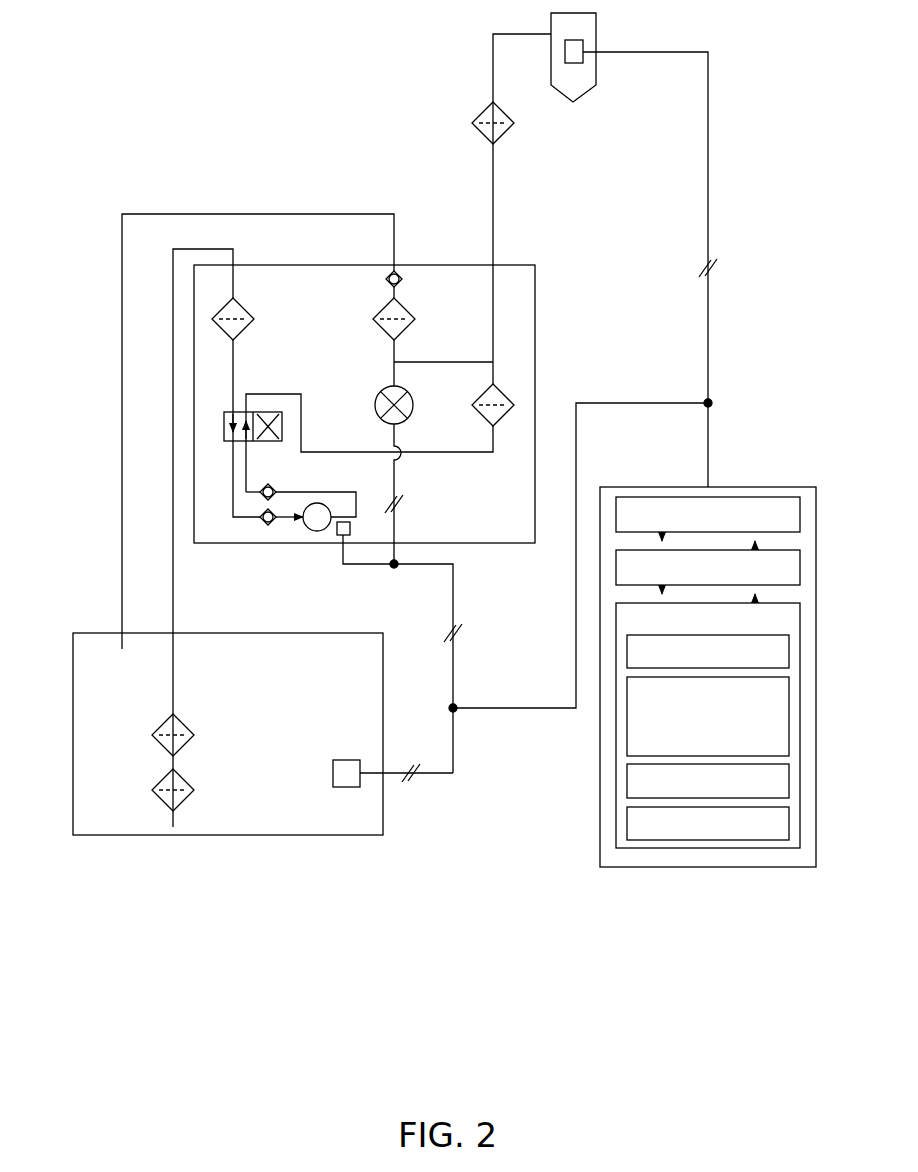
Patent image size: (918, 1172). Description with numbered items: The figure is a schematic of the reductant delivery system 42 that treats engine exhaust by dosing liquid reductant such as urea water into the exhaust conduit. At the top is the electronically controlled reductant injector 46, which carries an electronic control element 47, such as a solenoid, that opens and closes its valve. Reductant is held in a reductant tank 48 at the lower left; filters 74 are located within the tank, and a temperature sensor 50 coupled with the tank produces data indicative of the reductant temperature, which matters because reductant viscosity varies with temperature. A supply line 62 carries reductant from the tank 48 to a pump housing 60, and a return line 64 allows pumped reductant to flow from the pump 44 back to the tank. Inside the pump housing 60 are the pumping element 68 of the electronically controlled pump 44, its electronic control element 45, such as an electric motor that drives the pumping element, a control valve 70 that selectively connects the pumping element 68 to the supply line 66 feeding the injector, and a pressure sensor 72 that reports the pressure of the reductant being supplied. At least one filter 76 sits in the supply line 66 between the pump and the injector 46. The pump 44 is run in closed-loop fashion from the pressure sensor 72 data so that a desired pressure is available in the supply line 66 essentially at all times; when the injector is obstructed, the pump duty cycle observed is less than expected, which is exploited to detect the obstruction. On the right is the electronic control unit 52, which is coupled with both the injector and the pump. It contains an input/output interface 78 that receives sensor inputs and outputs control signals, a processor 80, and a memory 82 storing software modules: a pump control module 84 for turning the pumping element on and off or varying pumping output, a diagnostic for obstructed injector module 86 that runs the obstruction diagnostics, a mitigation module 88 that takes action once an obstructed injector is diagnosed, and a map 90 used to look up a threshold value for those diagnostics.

The reductant delivery system 42 is at (78, 250).
The electronically controlled pump 44 is at (393, 440).
The electronic control element 45 is at (350, 526).
The electronically controlled reductant injector 46 is at (596, 17).
The electronic control element 47 is at (583, 62).
The reductant tank 48 is at (96, 633).
The temperature sensor 50 is at (348, 760).
The electronic control unit 52 is at (768, 487).
The pump housing 60 is at (535, 285).
The supply line 62 is at (177, 619).
The return line 64 is at (120, 538).
The supply line 66 is at (497, 190).
The pumping element 68 is at (315, 531).
The control valve 70 is at (235, 412).
The pressure sensor 72 is at (383, 392).
The filters 74 is at (160, 749).
The filter 76 is at (478, 137).
The input/output interface 78 is at (800, 504).
The processor 80 is at (800, 558).
The memory 82 is at (800, 608).
The pump control module 84 is at (789, 653).
The diagnostic for obstructed injector module 86 is at (789, 695).
The mitigation module 88 is at (789, 778).
The map 90 is at (789, 820).